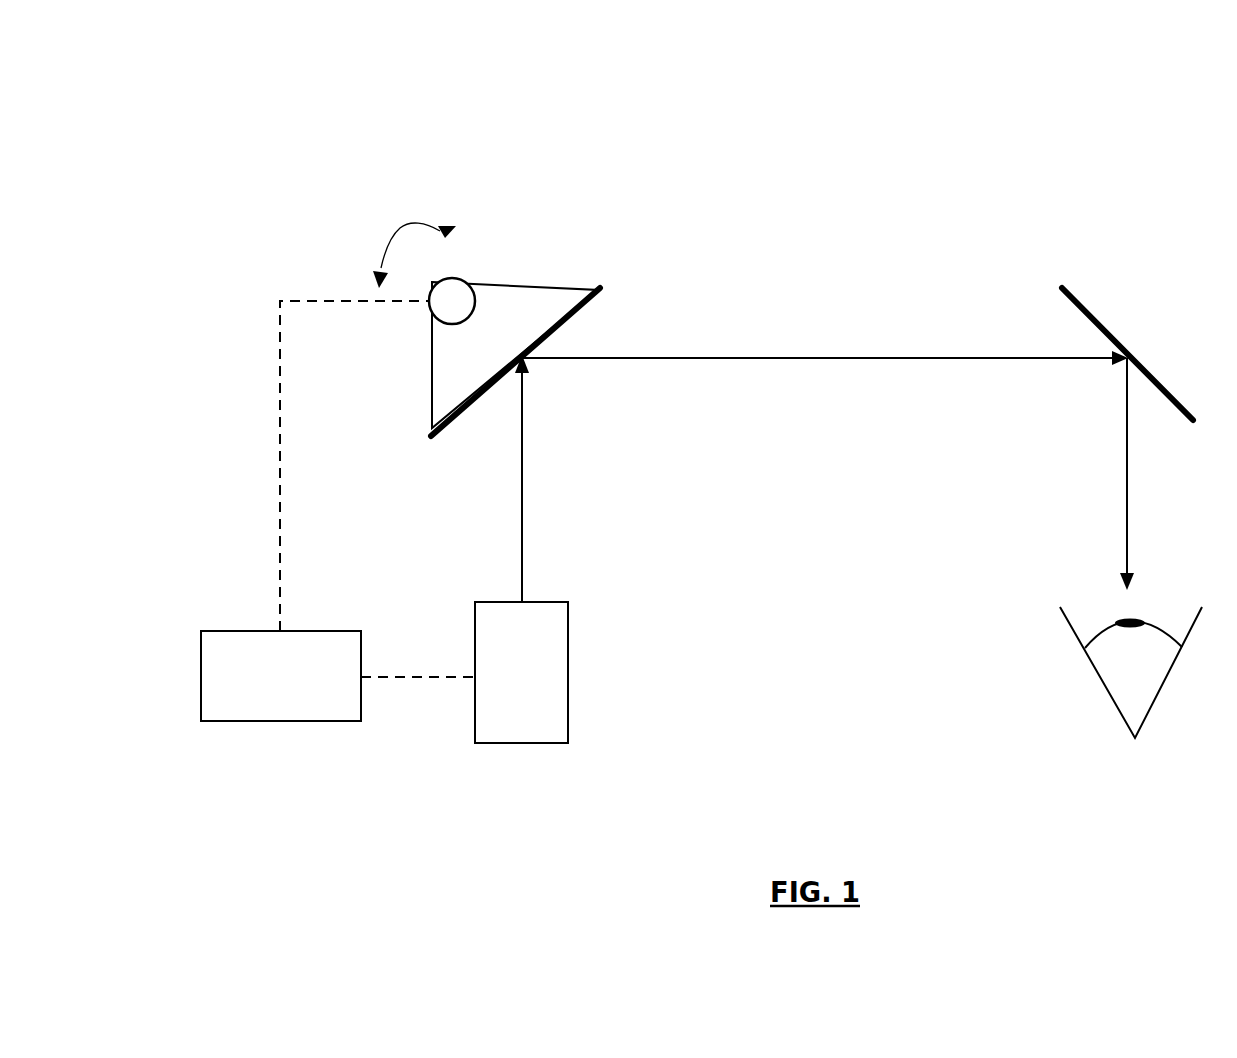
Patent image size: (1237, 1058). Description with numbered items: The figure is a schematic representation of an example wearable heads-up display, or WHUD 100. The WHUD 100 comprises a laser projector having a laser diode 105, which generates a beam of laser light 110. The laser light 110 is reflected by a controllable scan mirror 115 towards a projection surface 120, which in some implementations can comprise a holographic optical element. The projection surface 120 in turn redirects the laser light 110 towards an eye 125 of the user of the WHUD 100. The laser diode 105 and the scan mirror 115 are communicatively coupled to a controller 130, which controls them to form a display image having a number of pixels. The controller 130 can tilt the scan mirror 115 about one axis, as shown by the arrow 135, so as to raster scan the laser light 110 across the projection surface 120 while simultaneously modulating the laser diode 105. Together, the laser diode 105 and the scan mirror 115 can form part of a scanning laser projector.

The WHUD 100 is at (1014, 116).
The laser diode 105 is at (500, 688).
The beam of laser light 110 is at (522, 508).
The controllable scan mirror 115 is at (535, 282).
The projection surface 120 is at (1088, 313).
The eye 125 is at (1100, 685).
The controller 130 is at (260, 685).
The arrow 135 is at (408, 224).